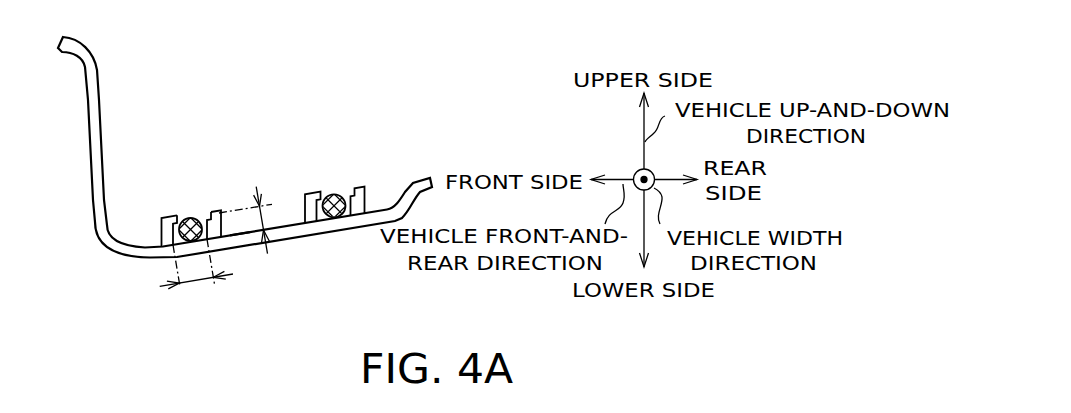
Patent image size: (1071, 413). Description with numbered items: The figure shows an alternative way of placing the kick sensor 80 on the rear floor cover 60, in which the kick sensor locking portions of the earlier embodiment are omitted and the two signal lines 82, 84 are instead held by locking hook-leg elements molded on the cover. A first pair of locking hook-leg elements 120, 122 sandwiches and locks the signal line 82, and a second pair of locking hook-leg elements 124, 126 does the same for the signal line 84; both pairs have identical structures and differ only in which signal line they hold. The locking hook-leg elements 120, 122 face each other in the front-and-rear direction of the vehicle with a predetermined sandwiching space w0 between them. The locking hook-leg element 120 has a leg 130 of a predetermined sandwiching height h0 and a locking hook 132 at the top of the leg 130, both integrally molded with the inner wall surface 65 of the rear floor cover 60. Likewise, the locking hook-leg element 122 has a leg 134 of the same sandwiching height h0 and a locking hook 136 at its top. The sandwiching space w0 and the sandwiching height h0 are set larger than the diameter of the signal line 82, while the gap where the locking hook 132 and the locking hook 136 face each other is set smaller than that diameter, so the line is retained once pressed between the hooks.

The rear floor cover 60 is at (93, 209).
The inner wall surface 65 is at (239, 227).
The kick sensor 80 is at (282, 82).
The signal line 82 is at (189, 218).
The signal line 84 is at (334, 194).
The locking hook-leg element 120 is at (187, 131).
The locking hook-leg element 122 is at (273, 116).
The locking hook-leg element 124 is at (307, 192).
The locking hook-leg element 126 is at (365, 186).
The leg 130 is at (161, 240).
The locking hook 132 is at (162, 216).
The leg 134 is at (222, 209).
The locking hook 136 is at (211, 211).
The sandwiching space w0 is at (196, 276).
The sandwiching height h0 is at (260, 220).